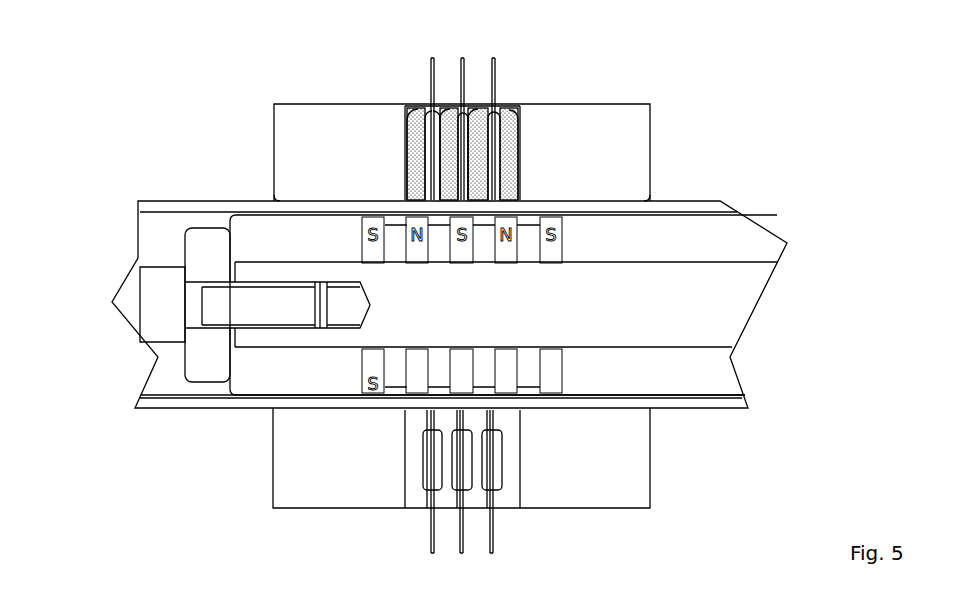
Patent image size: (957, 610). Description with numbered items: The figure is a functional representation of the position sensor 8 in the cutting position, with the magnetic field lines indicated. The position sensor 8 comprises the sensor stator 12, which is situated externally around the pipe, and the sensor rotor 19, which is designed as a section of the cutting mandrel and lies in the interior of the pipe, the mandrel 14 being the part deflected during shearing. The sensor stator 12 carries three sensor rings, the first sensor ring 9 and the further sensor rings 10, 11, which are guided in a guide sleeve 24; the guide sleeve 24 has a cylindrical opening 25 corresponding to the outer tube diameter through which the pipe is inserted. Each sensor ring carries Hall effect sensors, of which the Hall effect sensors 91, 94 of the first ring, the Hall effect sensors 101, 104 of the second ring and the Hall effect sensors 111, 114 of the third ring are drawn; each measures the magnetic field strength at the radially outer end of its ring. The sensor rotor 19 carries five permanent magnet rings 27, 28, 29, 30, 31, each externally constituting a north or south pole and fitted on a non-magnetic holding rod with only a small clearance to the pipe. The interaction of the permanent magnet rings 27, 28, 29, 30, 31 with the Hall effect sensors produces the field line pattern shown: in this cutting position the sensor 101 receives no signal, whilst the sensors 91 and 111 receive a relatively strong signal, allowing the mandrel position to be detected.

The position sensor 8 is at (95, 450).
The first sensor ring 9 is at (432, 52).
The sensor ring 10 is at (462, 50).
The sensor ring 11 is at (495, 50).
The sensor stator 12 is at (675, 150).
The mandrel 14 is at (575, 242).
The sensor rotor 19 is at (722, 319).
The guide sleeve 24 is at (308, 138).
The cylindrical opening 25 is at (250, 228).
The permanent magnet ring 27 is at (378, 352).
The permanent magnet ring 28 is at (420, 362).
The permanent magnet ring 29 is at (462, 362).
The permanent magnet ring 30 is at (504, 362).
The permanent magnet ring 31 is at (550, 362).
The Hall effect sensor 91 is at (433, 142).
The Hall effect sensor 101 is at (462, 140).
The Hall effect sensor 111 is at (493, 148).
The Hall effect sensor 94 is at (433, 472).
The Hall effect sensor 104 is at (464, 478).
The Hall effect sensor 114 is at (490, 473).